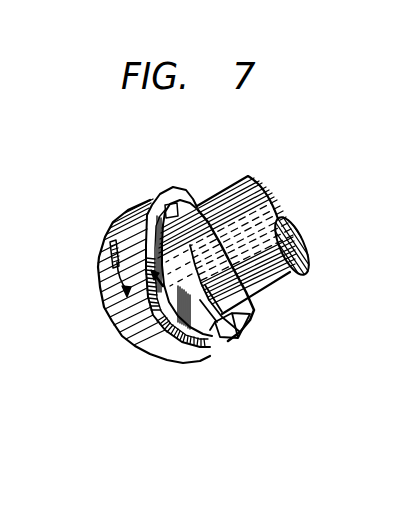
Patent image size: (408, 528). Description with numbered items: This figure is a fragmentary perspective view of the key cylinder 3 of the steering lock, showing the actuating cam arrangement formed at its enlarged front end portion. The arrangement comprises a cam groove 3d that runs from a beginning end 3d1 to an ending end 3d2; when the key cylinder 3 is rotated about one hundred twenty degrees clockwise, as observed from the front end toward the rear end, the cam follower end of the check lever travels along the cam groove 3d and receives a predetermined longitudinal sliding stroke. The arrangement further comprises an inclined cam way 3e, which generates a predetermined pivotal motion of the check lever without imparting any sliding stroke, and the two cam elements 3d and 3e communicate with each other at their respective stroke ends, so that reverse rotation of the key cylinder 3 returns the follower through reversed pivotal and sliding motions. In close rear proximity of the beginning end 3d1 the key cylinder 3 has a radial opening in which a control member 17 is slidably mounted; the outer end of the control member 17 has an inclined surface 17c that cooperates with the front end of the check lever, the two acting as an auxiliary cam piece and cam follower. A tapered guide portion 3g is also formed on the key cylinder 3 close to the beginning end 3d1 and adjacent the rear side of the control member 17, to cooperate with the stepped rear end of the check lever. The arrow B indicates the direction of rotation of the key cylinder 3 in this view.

The key cylinder 3 is at (230, 213).
The cam groove 3d is at (160, 360).
The beginning end of cam groove 3d1 is at (205, 362).
The ending end of cam groove 3d2 is at (143, 274).
The inclined cam way 3e is at (158, 326).
The tapered guide portion 3g is at (247, 314).
The control member 17 is at (217, 337).
The inclined surface 17c is at (226, 333).
The direction arrow / section marker B is at (110, 252).